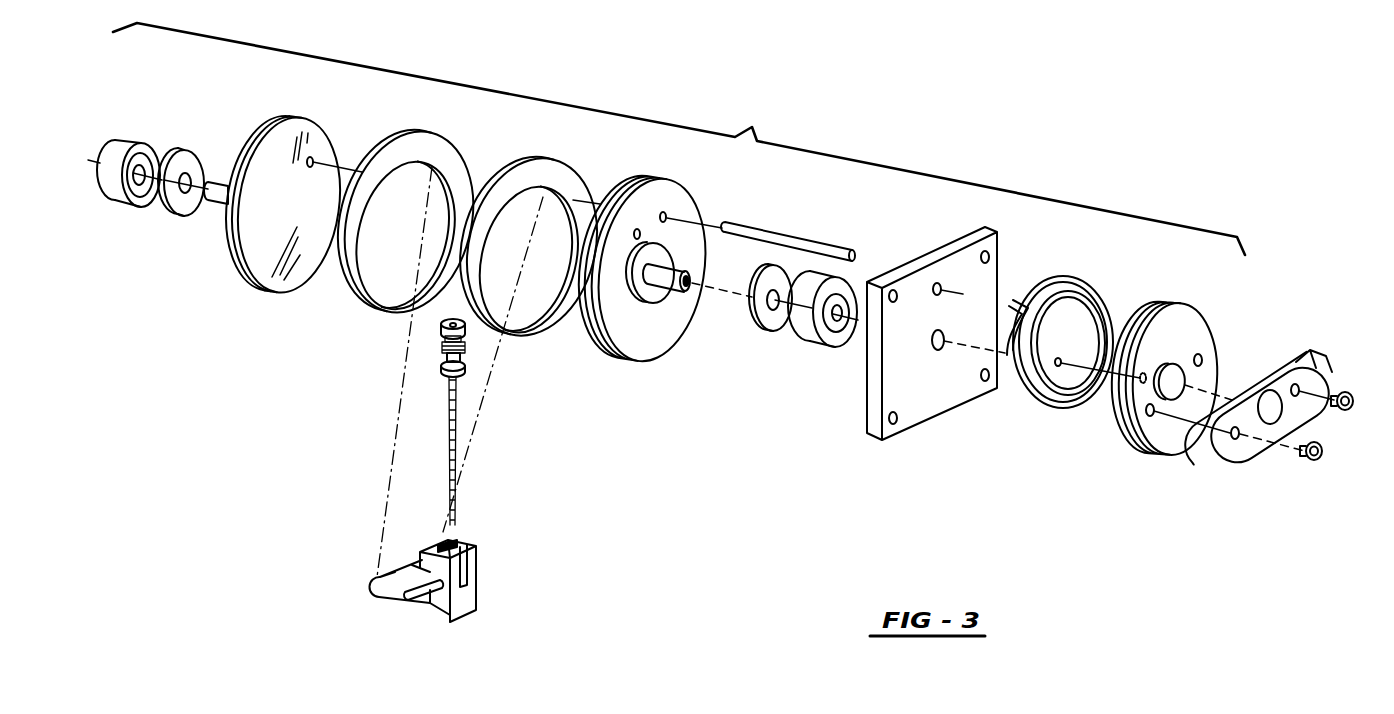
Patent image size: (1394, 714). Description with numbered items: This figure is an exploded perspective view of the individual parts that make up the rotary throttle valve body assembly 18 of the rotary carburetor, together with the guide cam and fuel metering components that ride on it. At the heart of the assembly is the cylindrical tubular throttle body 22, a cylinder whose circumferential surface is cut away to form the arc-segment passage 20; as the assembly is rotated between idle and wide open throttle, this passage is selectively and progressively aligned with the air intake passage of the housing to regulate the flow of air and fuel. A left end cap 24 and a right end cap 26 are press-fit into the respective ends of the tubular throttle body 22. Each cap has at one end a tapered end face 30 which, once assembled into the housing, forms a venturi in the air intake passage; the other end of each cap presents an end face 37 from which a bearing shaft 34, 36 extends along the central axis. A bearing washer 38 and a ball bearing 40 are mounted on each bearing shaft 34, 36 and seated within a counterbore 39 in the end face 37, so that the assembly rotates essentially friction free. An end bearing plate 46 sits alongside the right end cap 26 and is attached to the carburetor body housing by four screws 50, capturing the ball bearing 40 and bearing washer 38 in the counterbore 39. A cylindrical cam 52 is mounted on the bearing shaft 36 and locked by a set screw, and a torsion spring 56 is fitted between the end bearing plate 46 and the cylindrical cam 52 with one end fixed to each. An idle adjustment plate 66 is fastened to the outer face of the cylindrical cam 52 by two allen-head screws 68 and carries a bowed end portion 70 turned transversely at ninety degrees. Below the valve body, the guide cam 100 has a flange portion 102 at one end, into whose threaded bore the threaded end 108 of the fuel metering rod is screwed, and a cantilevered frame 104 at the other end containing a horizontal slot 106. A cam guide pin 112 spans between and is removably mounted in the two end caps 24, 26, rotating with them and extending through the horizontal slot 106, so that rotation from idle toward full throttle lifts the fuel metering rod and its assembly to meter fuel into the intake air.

The rotary throttle valve body assembly 18 is at (752, 127).
The arc-segment passage 20 is at (437, 170).
The cylindrical tubular throttle body 22 is at (502, 160).
The left end cap 24 is at (277, 247).
The right end cap 26 is at (669, 312).
The tapered end face 30 is at (292, 218).
The bearing shaft 34 is at (220, 200).
The bearing shaft 36 is at (668, 292).
The end face 37 is at (683, 202).
The bearing washer 38 is at (178, 150).
The counterbore 39 is at (652, 302).
The ball bearing 40 is at (100, 135).
The end bearing plate 46 is at (972, 366).
The screws 50 is at (897, 422).
The cylindrical cam 52 is at (1210, 325).
The torsion spring 56 is at (1098, 300).
The idle adjustment plate 66 is at (1256, 419).
The allen-head screws 68 is at (1345, 412).
The bowed end portion 70 is at (1315, 363).
The guide cam 100 is at (422, 593).
The flange portion 102 is at (470, 579).
The cantilevered frame 104 is at (412, 558).
The horizontal slot 106 is at (425, 597).
The threaded end 108 is at (465, 341).
The cam guide pin 112 is at (814, 241).